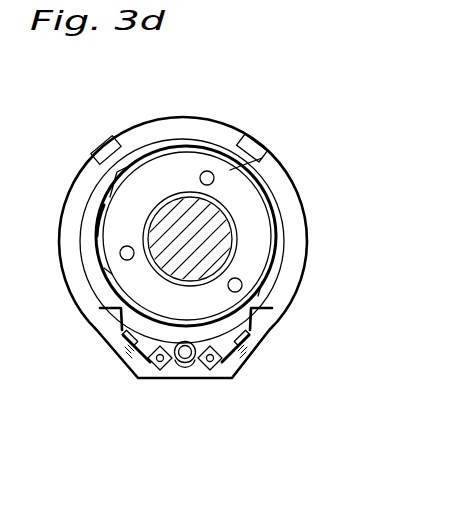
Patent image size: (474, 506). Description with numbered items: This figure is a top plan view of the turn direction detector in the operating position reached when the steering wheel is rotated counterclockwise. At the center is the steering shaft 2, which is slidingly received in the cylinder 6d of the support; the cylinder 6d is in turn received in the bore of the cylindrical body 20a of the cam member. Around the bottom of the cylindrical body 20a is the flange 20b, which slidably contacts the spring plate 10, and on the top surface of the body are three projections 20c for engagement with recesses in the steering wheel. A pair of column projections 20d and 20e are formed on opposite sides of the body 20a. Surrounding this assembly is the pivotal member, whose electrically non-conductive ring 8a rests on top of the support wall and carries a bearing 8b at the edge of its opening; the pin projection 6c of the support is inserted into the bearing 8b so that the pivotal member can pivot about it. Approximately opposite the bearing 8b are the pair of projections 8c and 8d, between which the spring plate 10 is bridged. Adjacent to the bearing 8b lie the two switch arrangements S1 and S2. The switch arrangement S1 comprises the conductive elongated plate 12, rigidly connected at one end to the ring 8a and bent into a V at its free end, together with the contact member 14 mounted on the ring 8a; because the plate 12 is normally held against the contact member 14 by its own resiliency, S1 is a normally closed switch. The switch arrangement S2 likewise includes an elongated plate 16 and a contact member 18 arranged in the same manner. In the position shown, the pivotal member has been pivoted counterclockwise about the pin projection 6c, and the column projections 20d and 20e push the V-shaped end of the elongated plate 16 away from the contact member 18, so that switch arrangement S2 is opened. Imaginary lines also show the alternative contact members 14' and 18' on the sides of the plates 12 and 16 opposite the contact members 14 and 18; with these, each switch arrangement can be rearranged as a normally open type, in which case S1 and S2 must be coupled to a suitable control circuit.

The steering shaft 2 is at (183, 226).
The spring plate 10 is at (187, 146).
The pin projection 6c is at (189, 362).
The cylinder 6d is at (237, 222).
The ring 8a is at (306, 238).
The bearing 8b is at (180, 363).
The projection 8c is at (103, 136).
The projection 8d is at (251, 142).
The elongated plate 12 is at (138, 380).
The contact member 14 is at (92, 363).
The contact member 14' is at (101, 392).
The elongated plate 16 is at (229, 380).
The contact member 18 is at (277, 363).
The contact member 18' is at (276, 392).
The cylindrical body 20a is at (112, 274).
The flange 20b is at (98, 213).
The projections 20c is at (214, 178).
The column projection 20d is at (258, 296).
The column projection 20e is at (126, 177).
The switch arrangement S1 is at (114, 328).
The switch arrangement S2 is at (270, 326).